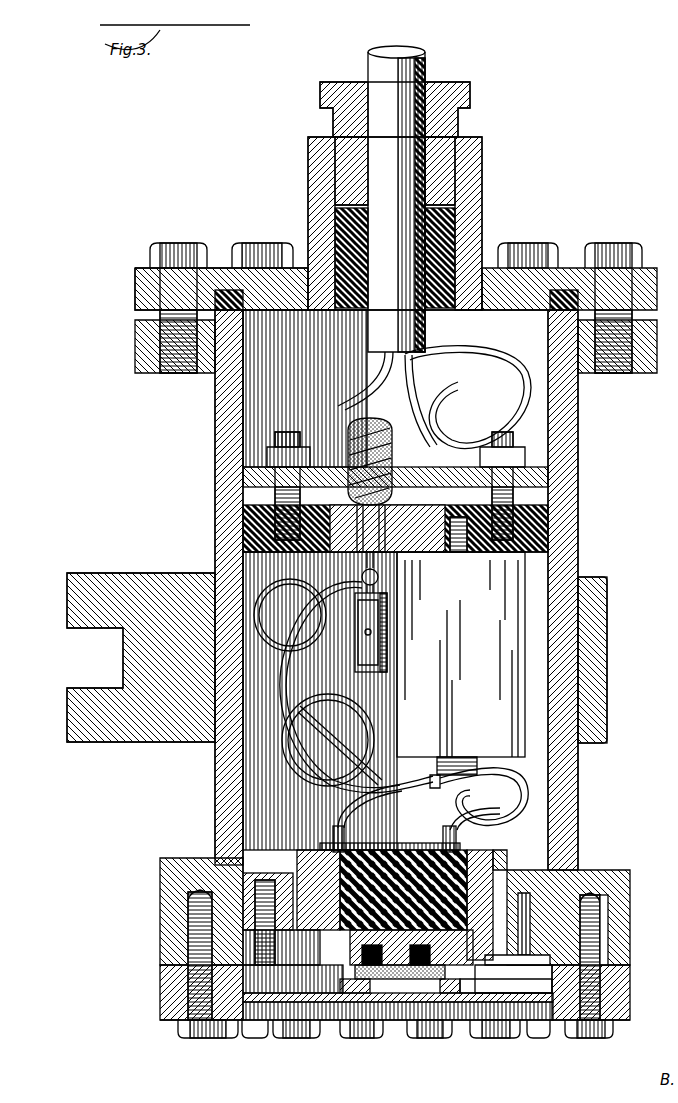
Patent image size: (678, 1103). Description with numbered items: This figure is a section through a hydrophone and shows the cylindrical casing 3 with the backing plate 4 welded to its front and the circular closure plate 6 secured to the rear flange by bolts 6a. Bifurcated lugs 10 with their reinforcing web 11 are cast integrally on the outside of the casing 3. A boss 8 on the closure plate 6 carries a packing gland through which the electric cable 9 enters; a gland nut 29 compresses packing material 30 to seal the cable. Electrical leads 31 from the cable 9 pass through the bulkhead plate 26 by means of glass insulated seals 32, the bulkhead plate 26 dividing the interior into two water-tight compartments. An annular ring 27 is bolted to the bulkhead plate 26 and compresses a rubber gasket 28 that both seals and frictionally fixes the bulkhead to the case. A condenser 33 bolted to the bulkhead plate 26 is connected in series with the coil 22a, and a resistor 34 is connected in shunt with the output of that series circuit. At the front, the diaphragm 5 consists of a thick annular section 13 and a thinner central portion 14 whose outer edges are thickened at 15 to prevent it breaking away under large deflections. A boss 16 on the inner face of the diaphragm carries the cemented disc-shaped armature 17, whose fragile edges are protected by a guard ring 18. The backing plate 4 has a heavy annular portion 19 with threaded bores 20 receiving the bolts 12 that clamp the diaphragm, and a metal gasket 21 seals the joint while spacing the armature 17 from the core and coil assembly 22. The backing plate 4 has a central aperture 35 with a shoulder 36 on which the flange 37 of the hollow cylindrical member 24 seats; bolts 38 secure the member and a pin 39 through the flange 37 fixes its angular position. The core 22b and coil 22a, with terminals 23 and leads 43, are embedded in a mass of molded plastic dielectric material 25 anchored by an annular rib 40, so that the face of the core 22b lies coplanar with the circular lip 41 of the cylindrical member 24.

The cylindrical casing 3 is at (215, 472).
The backing plate 4 is at (630, 880).
The diaphragm 5 is at (152, 1000).
The closure plate 6 is at (672, 345).
The bolts 6a is at (640, 243).
The boss 8 is at (482, 168).
The electric cable 9 is at (425, 62).
The bifurcated lugs 10 is at (135, 575).
The reinforcing web 11 is at (607, 665).
The bolts 12 is at (587, 1046).
The annular section 13 is at (630, 992).
The central portion 14 is at (340, 1003).
The thickened outer edges 15 is at (240, 1035).
The boss 16 is at (392, 1020).
The armature 17 is at (395, 1005).
The guard ring 18 is at (470, 995).
The annular portion 19 is at (160, 902).
The threaded bores 20 is at (598, 893).
The metal gasket 21 is at (160, 972).
The core and coil assembly 22 is at (410, 980).
The coil 22a is at (425, 1000).
The core 22b is at (320, 980).
The terminals 23 is at (395, 835).
The hollow cylindrical member 24 is at (493, 855).
The molded plastic dielectric material 25 is at (420, 850).
The bulkhead plate 26 is at (548, 556).
The annular ring 27 is at (548, 477).
The gasket 28 is at (548, 527).
The gland nut 29 is at (470, 98).
The packing material 30 is at (457, 230).
The electrical leads 31 is at (485, 360).
The glass insulated seals 32 is at (395, 455).
The condenser 33 is at (480, 648).
The resistor 34 is at (370, 672).
The aperture 35 is at (522, 893).
The shoulder 36 is at (608, 930).
The flange 37 is at (545, 958).
The bolts 38 is at (243, 875).
The pin 39 is at (580, 895).
The annular rib 40 is at (478, 1000).
The circular lip 41 is at (270, 1010).
The leads 43 is at (333, 835).